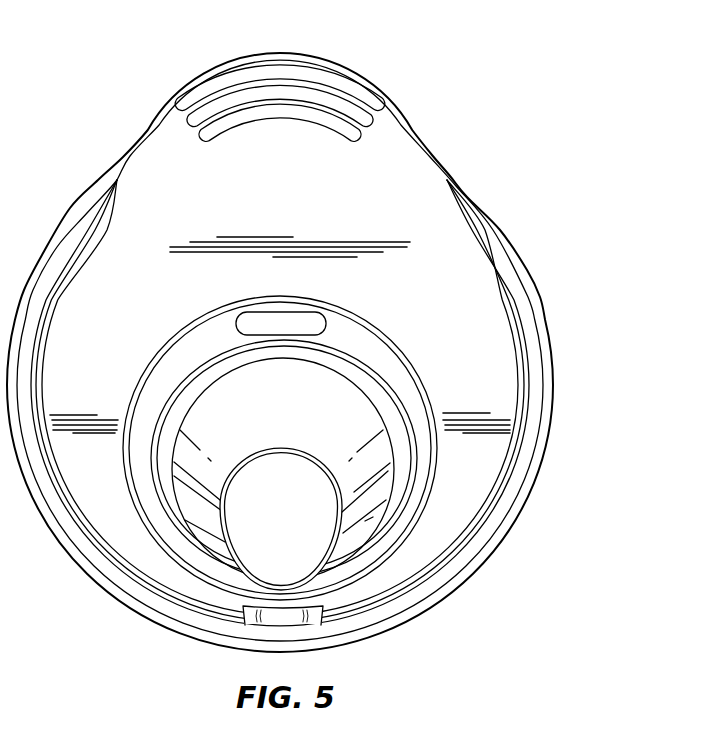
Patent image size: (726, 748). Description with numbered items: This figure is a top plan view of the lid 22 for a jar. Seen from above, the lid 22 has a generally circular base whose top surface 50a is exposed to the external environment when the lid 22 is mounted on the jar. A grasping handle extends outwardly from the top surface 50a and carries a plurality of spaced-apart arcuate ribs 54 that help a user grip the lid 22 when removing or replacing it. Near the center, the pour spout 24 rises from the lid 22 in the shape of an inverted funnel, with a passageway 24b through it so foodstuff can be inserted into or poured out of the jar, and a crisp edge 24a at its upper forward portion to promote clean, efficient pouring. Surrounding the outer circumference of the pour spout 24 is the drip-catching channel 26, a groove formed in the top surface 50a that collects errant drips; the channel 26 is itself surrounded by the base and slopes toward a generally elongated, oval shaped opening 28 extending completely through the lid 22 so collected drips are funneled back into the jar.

The lid 22 is at (530, 140).
The pour spout 24 is at (327, 423).
The crisp edge 24a is at (310, 580).
The passageway 24b is at (305, 557).
The drip-catching channel 26 is at (380, 378).
The opening 28 is at (300, 320).
The top surface 50a is at (470, 273).
The rib 54 is at (340, 78).